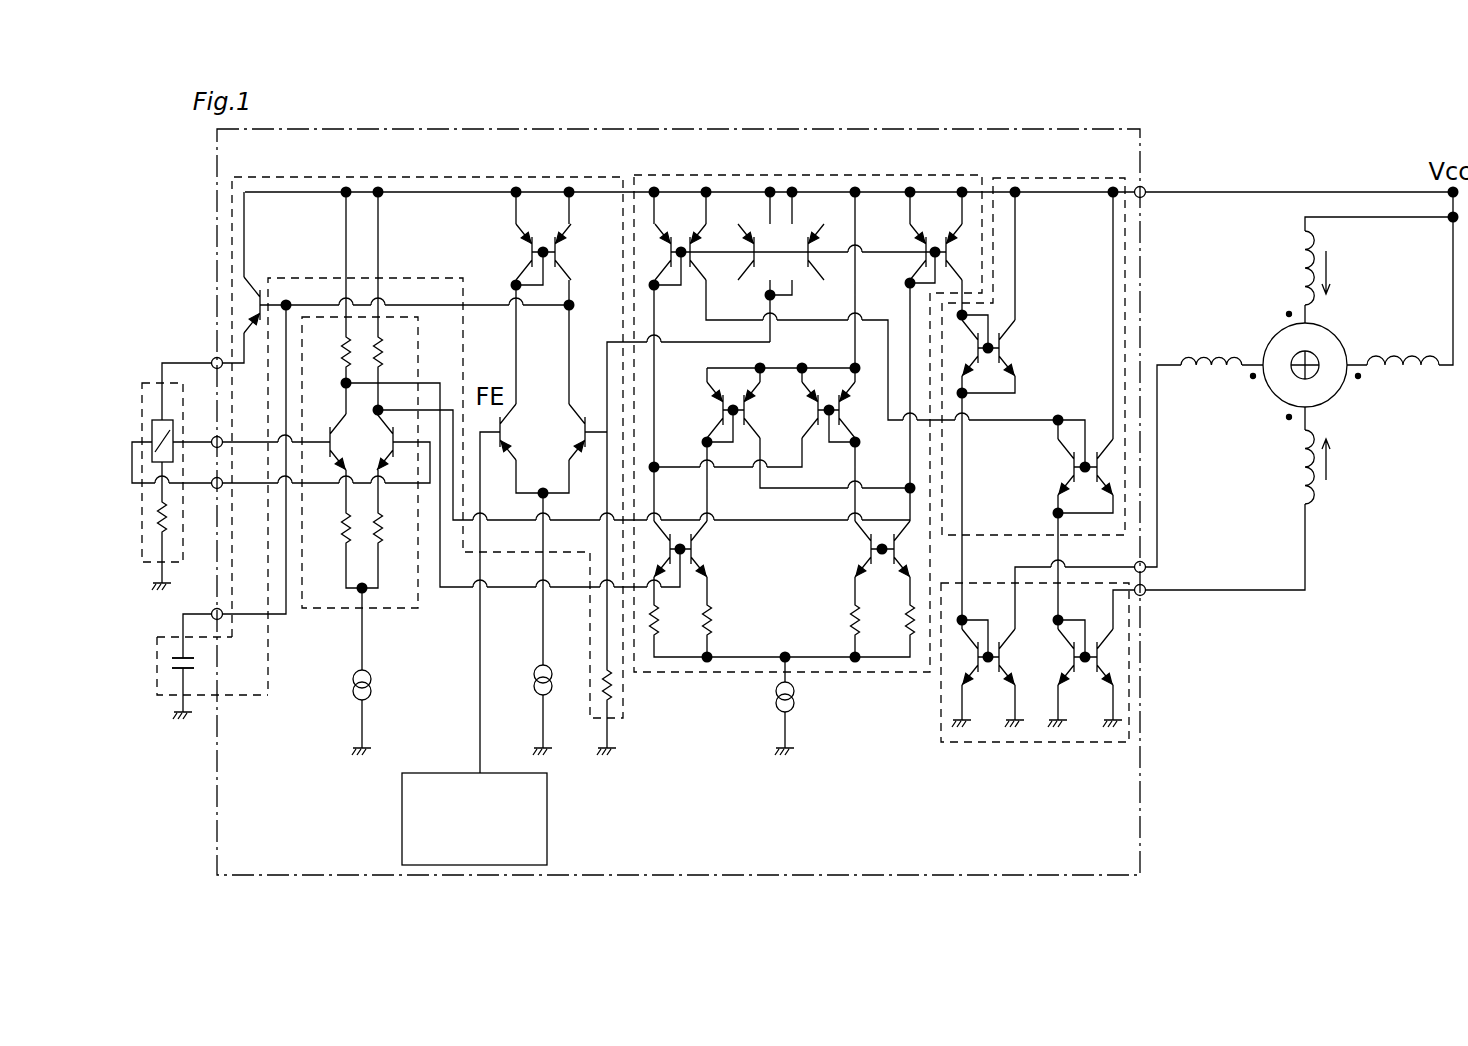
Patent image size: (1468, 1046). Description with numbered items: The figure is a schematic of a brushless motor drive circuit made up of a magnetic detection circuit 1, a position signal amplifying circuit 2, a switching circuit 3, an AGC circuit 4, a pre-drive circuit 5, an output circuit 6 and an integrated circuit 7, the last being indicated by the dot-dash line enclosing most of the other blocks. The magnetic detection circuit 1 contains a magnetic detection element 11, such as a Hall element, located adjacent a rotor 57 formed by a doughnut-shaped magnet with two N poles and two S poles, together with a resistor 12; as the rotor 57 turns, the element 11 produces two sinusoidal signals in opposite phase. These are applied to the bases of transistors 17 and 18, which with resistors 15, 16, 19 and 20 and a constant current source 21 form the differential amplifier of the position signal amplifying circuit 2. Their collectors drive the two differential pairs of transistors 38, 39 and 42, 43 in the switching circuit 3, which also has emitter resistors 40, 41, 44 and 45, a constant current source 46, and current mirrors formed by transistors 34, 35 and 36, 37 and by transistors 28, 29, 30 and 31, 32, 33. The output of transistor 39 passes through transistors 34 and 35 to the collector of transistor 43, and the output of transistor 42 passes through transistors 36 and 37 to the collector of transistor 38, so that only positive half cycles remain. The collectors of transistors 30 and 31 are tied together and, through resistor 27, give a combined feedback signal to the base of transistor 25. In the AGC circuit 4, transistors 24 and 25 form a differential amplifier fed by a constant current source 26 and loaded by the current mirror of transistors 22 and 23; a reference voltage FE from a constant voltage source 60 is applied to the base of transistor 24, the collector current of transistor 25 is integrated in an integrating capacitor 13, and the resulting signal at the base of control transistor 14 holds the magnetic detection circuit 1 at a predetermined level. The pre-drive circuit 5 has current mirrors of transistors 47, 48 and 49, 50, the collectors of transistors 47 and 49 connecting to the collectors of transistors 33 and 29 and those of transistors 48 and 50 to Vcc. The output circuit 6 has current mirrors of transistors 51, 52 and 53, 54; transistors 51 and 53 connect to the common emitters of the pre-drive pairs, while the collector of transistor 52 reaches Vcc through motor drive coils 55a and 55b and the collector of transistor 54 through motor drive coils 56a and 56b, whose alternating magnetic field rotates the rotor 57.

The magnetic detection circuit 1 is at (144, 382).
The position signal amplifying circuit 2 is at (340, 610).
The switching circuit 3 is at (845, 175).
The AGC circuit 4 is at (500, 177).
The pre-drive circuit 5 is at (1030, 178).
The output circuit 6 is at (1035, 745).
The integrated circuit 7 is at (1000, 128).
The magnetic detection element 11 is at (172, 438).
The resistor 12 is at (165, 517).
The integrating capacitor 13 is at (178, 670).
The control transistor 14 is at (252, 292).
The resistor 15 is at (342, 358).
The resistor 16 is at (378, 358).
The transistor 17 is at (338, 430).
The transistor 18 is at (385, 442).
The resistor 19 is at (344, 540).
The resistor 20 is at (378, 540).
The constant current source 21 is at (355, 690).
The transistor 22 is at (520, 248).
The transistor 23 is at (562, 248).
The transistor 24 is at (512, 432).
The transistor 25 is at (572, 442).
The constant current source 26 is at (536, 676).
The resistor 27 is at (614, 690).
The transistor 28 is at (662, 242).
The transistor 29 is at (702, 244).
The transistor 30 is at (766, 270).
The transistor 31 is at (800, 244).
The transistor 32 is at (916, 262).
The transistor 33 is at (954, 242).
The transistor 34 is at (714, 412).
The transistor 35 is at (754, 412).
The transistor 36 is at (808, 395).
The transistor 37 is at (850, 418).
The transistor 38 is at (660, 536).
The transistor 39 is at (700, 554).
The resistor 40 is at (660, 626).
The resistor 41 is at (712, 622).
The transistor 42 is at (856, 550).
The transistor 43 is at (896, 534).
The resistor 44 is at (848, 620).
The resistor 45 is at (904, 620).
The constant current source 46 is at (798, 700).
The transistor 47 is at (978, 370).
The transistor 48 is at (1010, 352).
The transistor 49 is at (1064, 470).
The transistor 50 is at (1102, 446).
The transistor 51 is at (972, 674).
The transistor 52 is at (1004, 652).
The transistor 53 is at (1068, 660).
The transistor 54 is at (1102, 674).
The motor drive coil 55a is at (1216, 356).
The motor drive coil 55b is at (1392, 356).
The motor drive coil 56a is at (1297, 450).
The motor drive coil 56b is at (1293, 263).
The rotor 57 is at (1338, 396).
The constant voltage source 60 is at (446, 773).